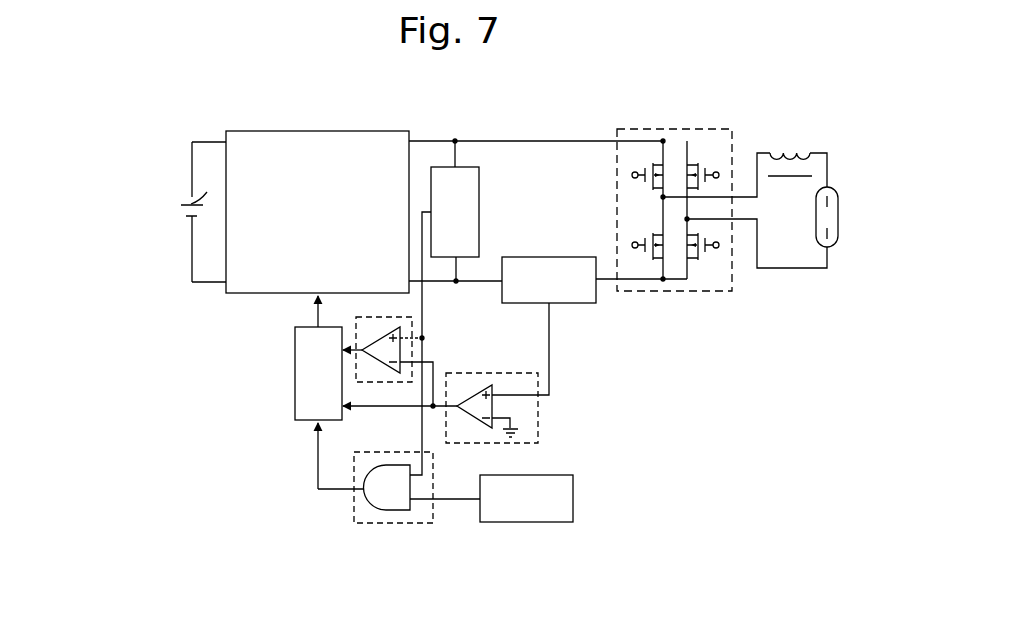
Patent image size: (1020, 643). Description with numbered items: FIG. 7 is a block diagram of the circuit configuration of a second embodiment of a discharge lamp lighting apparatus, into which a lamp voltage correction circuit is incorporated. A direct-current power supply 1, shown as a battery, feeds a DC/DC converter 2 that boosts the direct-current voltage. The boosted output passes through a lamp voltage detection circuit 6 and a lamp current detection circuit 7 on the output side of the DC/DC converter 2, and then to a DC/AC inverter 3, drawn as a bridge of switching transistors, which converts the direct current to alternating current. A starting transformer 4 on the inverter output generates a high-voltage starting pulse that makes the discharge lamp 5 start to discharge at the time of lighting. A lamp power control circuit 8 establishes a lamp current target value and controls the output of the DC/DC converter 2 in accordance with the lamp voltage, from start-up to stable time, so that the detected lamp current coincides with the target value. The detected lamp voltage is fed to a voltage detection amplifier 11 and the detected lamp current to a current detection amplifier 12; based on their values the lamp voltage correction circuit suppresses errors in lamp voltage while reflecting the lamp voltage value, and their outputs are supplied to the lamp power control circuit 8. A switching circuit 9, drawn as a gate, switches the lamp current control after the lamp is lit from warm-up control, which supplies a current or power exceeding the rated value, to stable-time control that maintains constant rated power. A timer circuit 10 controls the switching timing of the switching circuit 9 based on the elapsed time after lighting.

The direct-current power supply 1 is at (207, 171).
The DC/DC converter 2 is at (317, 165).
The DC/AC inverter 3 is at (699, 114).
The starting transformer 4 is at (799, 139).
The discharge lamp 5 is at (850, 185).
The lamp voltage detection circuit 6 is at (453, 205).
The lamp current detection circuit 7 is at (555, 300).
The lamp power control circuit 8 is at (250, 331).
The switching circuit 9 is at (451, 472).
The timer circuit 10 is at (547, 515).
The voltage detection amplifier 11 is at (392, 308).
The current detection amplifier 12 is at (514, 365).